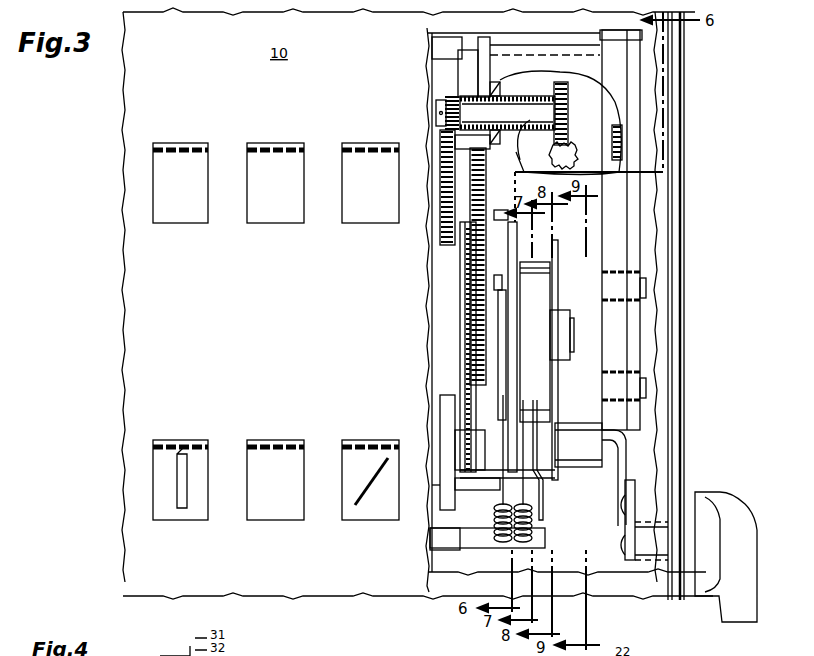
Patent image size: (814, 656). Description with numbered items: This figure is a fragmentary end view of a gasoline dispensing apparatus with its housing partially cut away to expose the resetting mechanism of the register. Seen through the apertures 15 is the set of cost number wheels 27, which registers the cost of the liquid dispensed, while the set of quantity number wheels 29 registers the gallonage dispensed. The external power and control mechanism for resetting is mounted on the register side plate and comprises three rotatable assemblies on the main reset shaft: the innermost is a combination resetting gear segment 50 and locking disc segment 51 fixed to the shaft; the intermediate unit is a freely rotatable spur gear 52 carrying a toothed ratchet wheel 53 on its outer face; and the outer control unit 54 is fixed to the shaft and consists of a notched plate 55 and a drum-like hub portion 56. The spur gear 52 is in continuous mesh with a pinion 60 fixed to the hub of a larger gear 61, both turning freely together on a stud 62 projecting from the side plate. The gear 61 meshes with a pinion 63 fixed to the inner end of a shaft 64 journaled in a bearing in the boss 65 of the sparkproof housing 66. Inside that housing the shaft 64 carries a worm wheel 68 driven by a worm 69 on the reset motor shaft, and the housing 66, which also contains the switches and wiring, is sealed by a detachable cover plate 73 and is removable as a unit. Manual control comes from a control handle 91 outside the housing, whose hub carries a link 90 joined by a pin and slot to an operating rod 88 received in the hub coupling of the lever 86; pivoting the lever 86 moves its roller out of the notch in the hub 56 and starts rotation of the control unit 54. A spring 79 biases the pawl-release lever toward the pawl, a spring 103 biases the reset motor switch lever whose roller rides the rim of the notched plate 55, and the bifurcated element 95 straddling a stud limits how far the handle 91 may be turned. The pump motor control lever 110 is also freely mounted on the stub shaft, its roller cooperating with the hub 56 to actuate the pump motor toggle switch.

The apertures 15 is at (208, 183).
The set of number wheels 27 is at (163, 222).
The set of number wheels 29 is at (163, 518).
The resetting gear segment 50 is at (465, 293).
The locking disc segment 51 is at (461, 268).
The spur gear 52 is at (487, 262).
The toothed ratchet wheel 53 is at (505, 309).
The control unit 54 is at (535, 342).
The notched plate 55 is at (513, 342).
The drum-like hub portion 56 is at (540, 308).
The pinion 60 is at (472, 142).
The gear 61 is at (440, 140).
The stud 62 is at (486, 182).
The pinion 63 is at (437, 101).
The shaft 64 is at (507, 113).
The boss 65 is at (544, 100).
The sparkproof housing 66 is at (560, 117).
The worm wheel 68 is at (572, 113).
The worm 69 is at (571, 152).
The detachable cover plate 73 is at (643, 242).
The spring 79 is at (501, 505).
The lever 86 is at (558, 404).
The operating rod 88 is at (623, 454).
The link 90 is at (625, 525).
The control handle 91 is at (746, 518).
The bifurcated element 95 is at (446, 519).
The spring 103 is at (533, 528).
The pump motor control lever 110 is at (543, 506).